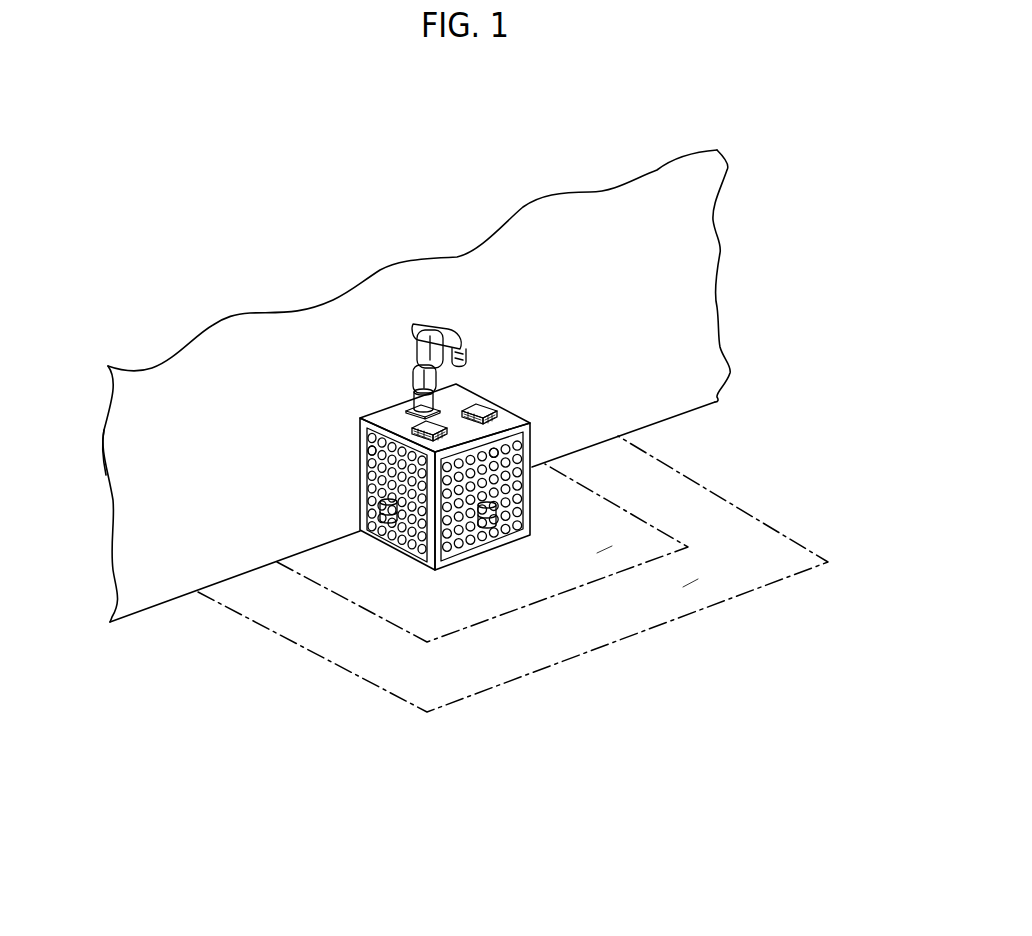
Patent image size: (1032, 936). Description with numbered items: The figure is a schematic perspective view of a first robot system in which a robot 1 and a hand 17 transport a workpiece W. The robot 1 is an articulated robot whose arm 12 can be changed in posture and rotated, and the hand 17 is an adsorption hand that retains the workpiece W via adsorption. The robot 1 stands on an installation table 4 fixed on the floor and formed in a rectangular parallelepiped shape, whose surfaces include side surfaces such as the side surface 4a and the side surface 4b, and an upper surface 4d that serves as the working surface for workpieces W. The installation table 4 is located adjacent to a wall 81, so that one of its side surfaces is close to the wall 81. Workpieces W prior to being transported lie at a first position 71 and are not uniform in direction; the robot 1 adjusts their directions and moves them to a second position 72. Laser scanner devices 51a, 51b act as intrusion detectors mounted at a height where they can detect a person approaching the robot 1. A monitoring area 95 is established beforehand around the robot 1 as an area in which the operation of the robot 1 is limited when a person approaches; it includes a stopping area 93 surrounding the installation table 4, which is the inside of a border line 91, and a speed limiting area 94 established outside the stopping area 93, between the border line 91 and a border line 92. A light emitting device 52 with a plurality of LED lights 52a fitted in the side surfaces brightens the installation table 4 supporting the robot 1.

The robot 1 is at (407, 295).
The installation table 4 is at (434, 465).
The side surface 4a is at (360, 476).
The side surface 4b is at (523, 540).
The upper surface 4d is at (512, 422).
The arm 12 is at (423, 356).
The hand 17 is at (455, 364).
The laser scanner device 51a is at (378, 503).
The laser scanner device 51b is at (499, 540).
The light emitting device 52 is at (519, 597).
The LED light 52a is at (518, 483).
The first position 71 is at (515, 408).
The second position 72 is at (377, 448).
The wall 81 is at (158, 393).
The border line 91 is at (687, 547).
The border line 92 is at (822, 562).
The stopping area 93 is at (597, 553).
The speed limiting area 94 is at (683, 587).
The monitoring area 95 is at (730, 631).
The workpiece W is at (375, 409).